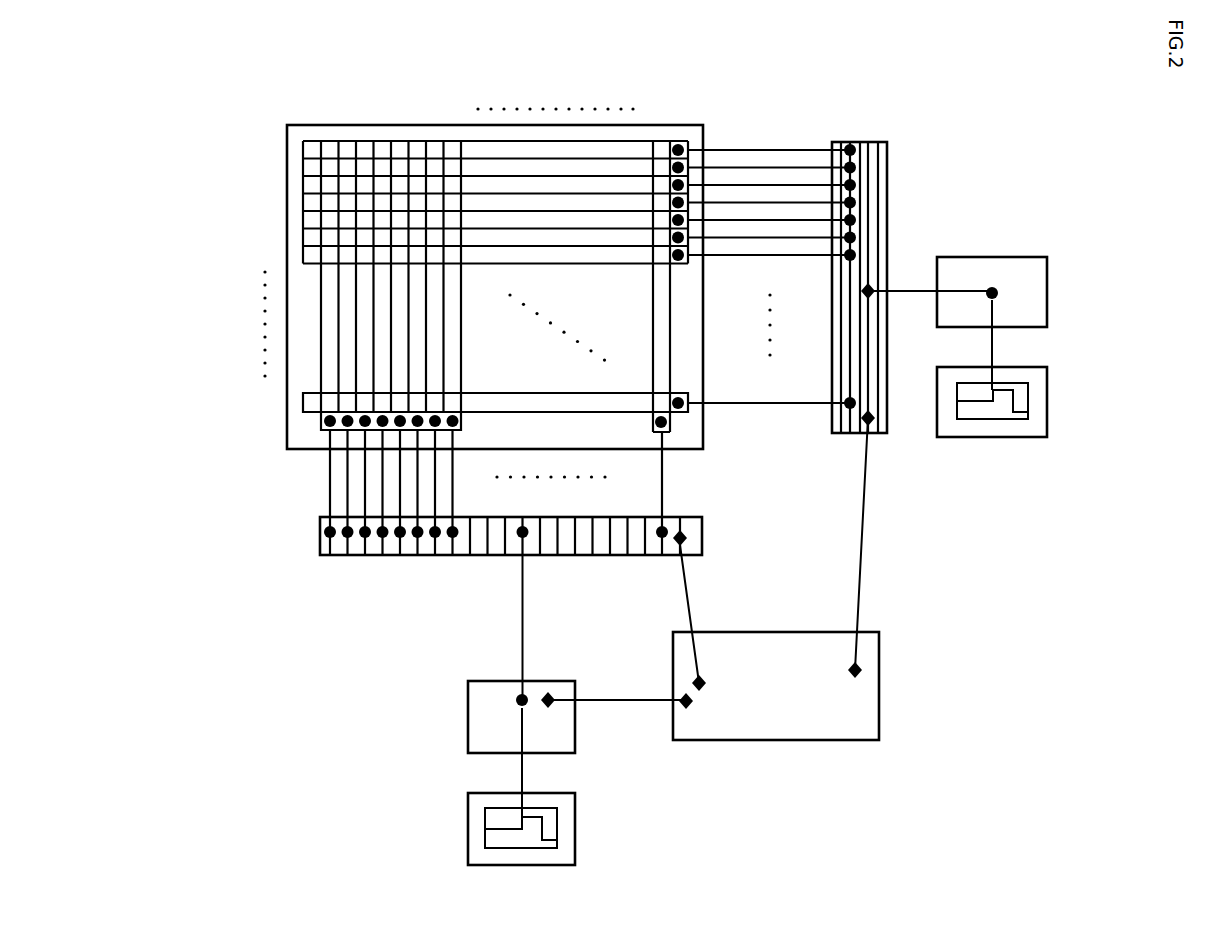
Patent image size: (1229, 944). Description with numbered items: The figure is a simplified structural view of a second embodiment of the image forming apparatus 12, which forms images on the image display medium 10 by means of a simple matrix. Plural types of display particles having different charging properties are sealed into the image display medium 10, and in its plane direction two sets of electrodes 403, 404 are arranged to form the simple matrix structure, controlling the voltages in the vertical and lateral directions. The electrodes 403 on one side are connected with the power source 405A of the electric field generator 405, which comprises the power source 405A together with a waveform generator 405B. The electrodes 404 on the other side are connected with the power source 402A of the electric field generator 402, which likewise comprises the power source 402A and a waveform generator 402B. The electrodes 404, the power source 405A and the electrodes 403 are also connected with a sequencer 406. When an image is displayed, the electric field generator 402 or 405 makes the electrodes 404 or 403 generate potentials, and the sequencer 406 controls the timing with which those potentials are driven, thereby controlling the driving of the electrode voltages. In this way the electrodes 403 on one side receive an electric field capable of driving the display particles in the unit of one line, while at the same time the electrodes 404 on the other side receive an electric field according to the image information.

The image display medium 10 is at (287, 433).
The image forming apparatus 12 is at (795, 96).
The electric field generator 402 is at (1031, 350).
The power source 402A is at (988, 257).
The waveform generator 402B is at (992, 439).
The electrodes 403An 403 is at (250, 137).
The electrodes 404Bn 404 is at (675, 100).
The electric field generator 405 is at (536, 772).
The power source 405A is at (572, 733).
The waveform generator 405B is at (575, 847).
The sequencer 406 is at (788, 740).